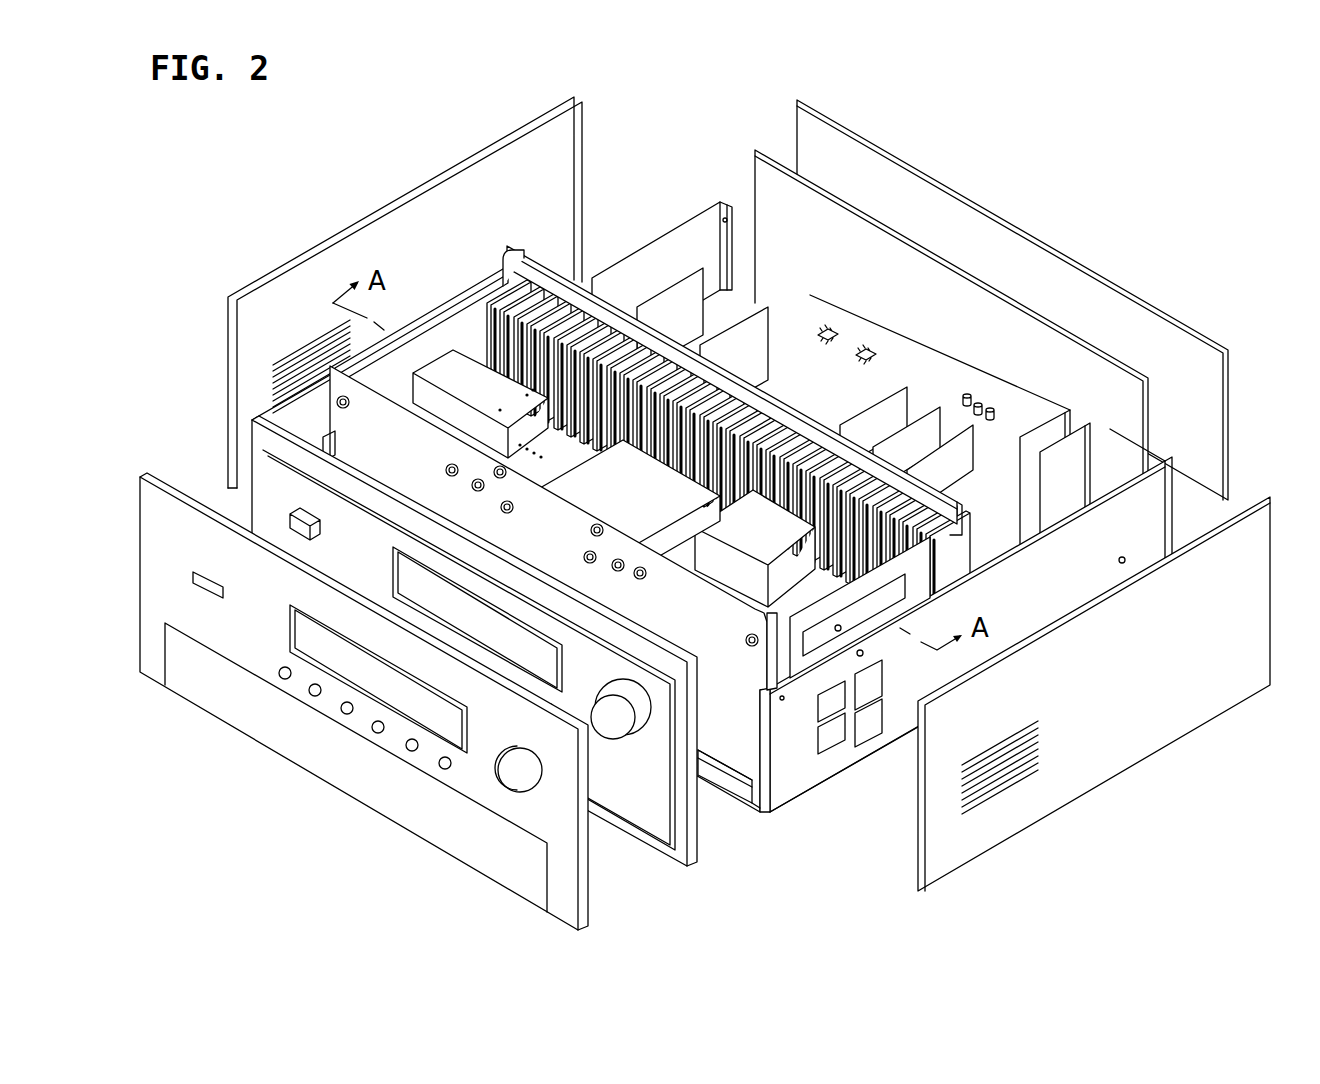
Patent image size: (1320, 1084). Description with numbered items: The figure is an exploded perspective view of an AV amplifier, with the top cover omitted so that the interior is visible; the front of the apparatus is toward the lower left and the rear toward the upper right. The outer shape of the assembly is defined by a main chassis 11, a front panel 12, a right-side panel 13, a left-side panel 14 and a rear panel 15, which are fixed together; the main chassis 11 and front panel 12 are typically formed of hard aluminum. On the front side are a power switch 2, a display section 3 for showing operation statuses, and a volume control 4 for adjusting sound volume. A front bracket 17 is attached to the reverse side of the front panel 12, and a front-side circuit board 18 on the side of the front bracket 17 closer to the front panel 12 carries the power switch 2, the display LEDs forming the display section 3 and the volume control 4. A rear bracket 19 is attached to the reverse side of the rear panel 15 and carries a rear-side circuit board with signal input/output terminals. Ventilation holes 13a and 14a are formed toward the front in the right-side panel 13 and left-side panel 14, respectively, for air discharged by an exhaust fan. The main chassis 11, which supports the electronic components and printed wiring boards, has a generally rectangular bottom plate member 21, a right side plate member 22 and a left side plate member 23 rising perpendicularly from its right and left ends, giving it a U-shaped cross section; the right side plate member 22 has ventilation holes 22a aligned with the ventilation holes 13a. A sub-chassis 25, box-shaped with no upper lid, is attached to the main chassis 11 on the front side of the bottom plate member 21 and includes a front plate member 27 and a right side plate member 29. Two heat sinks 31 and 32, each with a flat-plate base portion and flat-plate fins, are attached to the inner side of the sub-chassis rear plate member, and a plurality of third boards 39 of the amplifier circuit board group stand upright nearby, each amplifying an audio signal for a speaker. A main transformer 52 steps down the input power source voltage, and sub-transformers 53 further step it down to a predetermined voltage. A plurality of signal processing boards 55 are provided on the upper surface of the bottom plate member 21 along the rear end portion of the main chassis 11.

The power switch 2 is at (292, 520).
The display section 3 is at (404, 580).
The volume control 4 is at (605, 722).
The main chassis 11 is at (712, 639).
The front panel 12 is at (153, 667).
The right-side panel 13 is at (1135, 738).
The ventilation holes 13a is at (1003, 814).
The left-side panel 14 is at (343, 230).
The ventilation holes 14a is at (280, 345).
The rear panel 15 is at (797, 130).
The front bracket 17 is at (465, 676).
The front-side circuit board 18 is at (637, 812).
The rear bracket 19 is at (755, 182).
The bottom plate member 21 is at (742, 797).
The right side plate member 22 is at (830, 755).
The ventilation holes 22a is at (845, 737).
The left side plate member 23 is at (683, 243).
The sub-chassis 25 is at (436, 298).
The front plate member 27 is at (717, 738).
The right side plate member 29 is at (927, 579).
The heat sink 31 is at (787, 412).
The heat sink 32 is at (516, 260).
The third boards 39 is at (717, 320).
The main transformer 52 is at (612, 473).
The sub-transformer 53 is at (443, 377).
The signal processing boards 55 is at (925, 380).